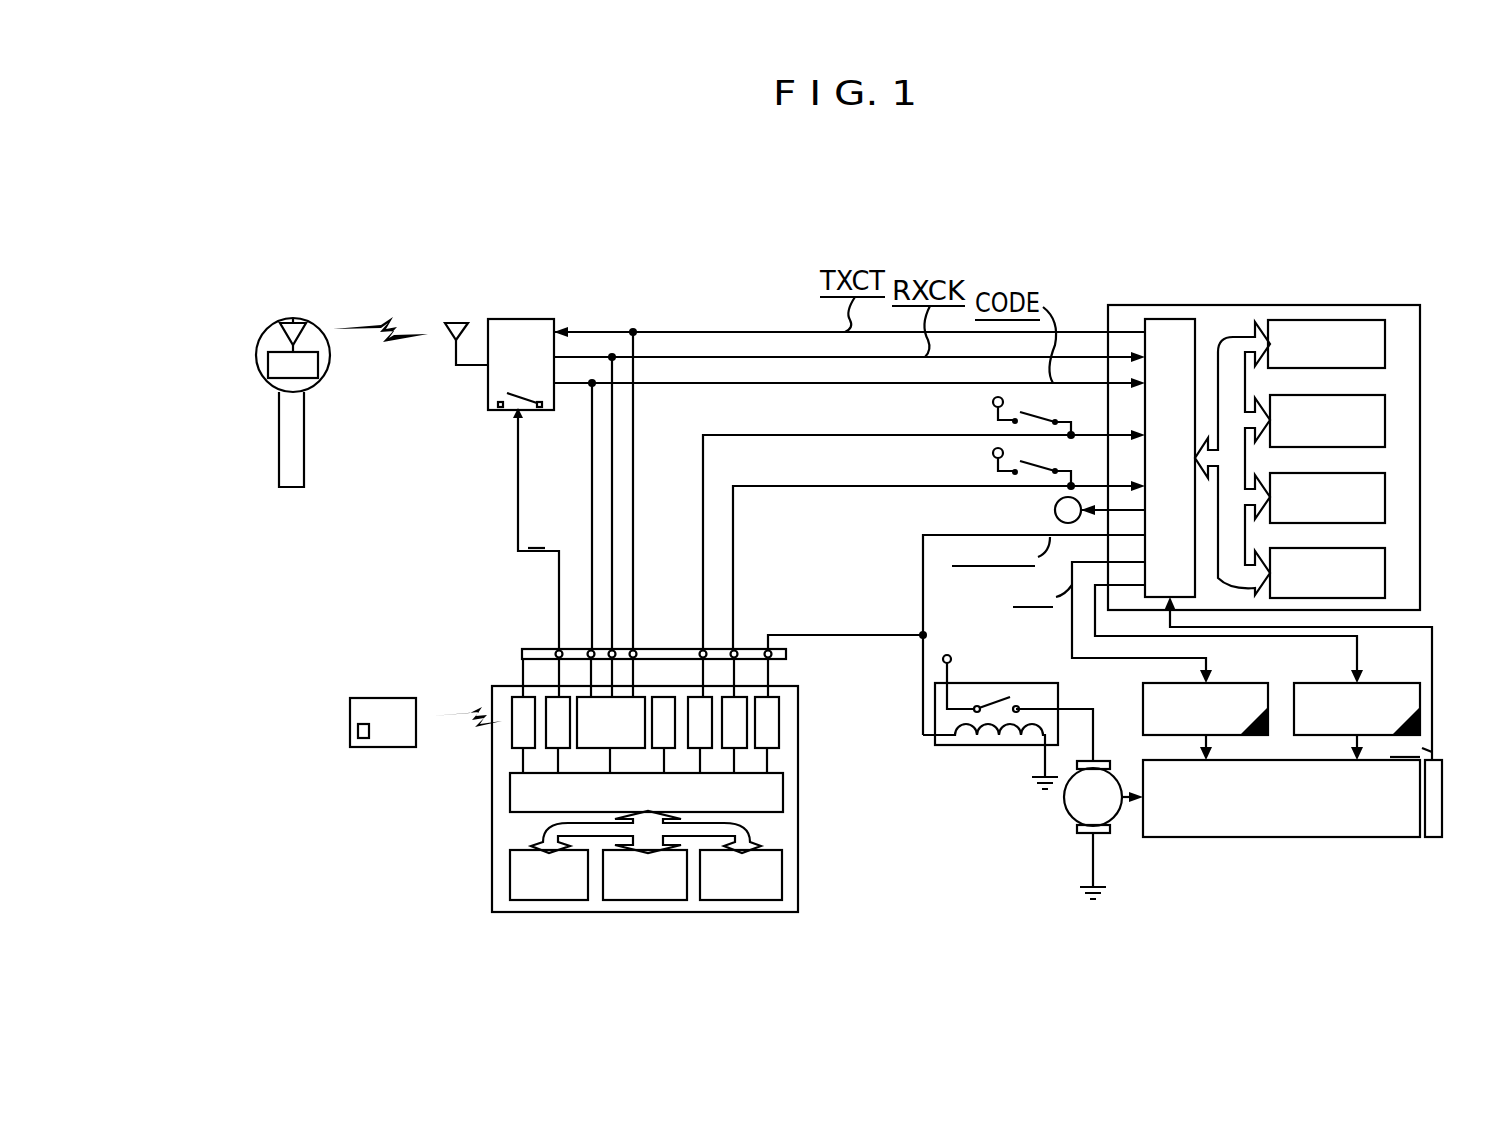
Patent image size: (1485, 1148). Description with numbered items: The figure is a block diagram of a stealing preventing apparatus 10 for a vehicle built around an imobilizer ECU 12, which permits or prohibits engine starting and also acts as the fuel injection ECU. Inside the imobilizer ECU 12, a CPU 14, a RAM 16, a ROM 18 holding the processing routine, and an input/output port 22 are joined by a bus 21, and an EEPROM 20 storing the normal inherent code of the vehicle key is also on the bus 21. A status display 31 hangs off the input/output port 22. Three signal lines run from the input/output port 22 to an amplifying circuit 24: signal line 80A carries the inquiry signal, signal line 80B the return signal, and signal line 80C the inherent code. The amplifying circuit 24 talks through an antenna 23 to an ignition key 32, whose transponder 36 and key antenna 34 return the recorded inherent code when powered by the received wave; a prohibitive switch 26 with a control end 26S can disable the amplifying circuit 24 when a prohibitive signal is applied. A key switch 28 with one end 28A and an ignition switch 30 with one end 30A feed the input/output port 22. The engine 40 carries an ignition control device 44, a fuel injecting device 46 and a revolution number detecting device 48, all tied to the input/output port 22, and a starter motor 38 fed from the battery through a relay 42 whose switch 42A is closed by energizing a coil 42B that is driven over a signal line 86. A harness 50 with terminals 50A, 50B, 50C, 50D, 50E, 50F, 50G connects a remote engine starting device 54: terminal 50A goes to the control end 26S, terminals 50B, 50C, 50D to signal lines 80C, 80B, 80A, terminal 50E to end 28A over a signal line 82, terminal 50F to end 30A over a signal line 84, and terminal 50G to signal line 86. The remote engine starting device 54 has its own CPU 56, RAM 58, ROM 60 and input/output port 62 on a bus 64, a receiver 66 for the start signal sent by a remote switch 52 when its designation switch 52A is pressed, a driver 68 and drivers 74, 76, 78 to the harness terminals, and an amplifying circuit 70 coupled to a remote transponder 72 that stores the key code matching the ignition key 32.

The stealing preventing apparatus 10 is at (758, 248).
The imobilizer ECU 12 is at (1264, 428).
The CPU 14 is at (1347, 342).
The RAM 16 is at (1348, 421).
The ROM 18 is at (1348, 497).
The EEPROM 20 is at (1344, 560).
The bus 21 is at (1239, 421).
The input/output port 22 is at (1183, 422).
The antenna 23 is at (464, 319).
The amplifying circuit 24 is at (521, 341).
The prohibitive switch 26 is at (541, 418).
The control end 26S is at (496, 528).
The key switch 28 is at (982, 406).
The one end of key switch 28A is at (1077, 415).
The ignition switch 30 is at (980, 480).
The one end of ignition switch 30A is at (1069, 466).
The status display 31 is at (1077, 516).
The ignition key 32 is at (275, 402).
The key antenna 34 is at (264, 312).
The transponder 36 is at (319, 387).
The starter motor 38 is at (1079, 804).
The engine 40 is at (1281, 823).
The relay 42 is at (996, 695).
The switch 42A is at (1022, 678).
The coil 42B is at (990, 763).
The ignition control device 44 is at (1143, 661).
The fuel injecting device 46 is at (1258, 672).
The revolution number detecting device 48 is at (1303, 741).
The harness 50 is at (647, 657).
The terminal 50A is at (535, 648).
The terminal 50B is at (551, 637).
The terminal 50C is at (645, 642).
The terminal 50D is at (655, 653).
The terminal 50E is at (741, 640).
The terminal 50F is at (764, 652).
The terminal 50G is at (844, 666).
The remote switch 52 is at (383, 695).
The designation switch 52A is at (330, 709).
The remote engine starting device 54 is at (624, 818).
The CPU 56 is at (549, 904).
The RAM 58 is at (645, 904).
The ROM 60 is at (741, 904).
The input/output port 62 is at (683, 792).
The bus 64 is at (694, 833).
The receiver 66 is at (503, 717).
The driver 68 is at (543, 717).
The amplifying circuit 70 is at (604, 737).
The remote transponder 72 is at (645, 737).
The driver 74 is at (682, 716).
The driver 76 is at (778, 716).
The driver 78 is at (800, 733).
The signal line 80A is at (849, 469).
The signal line 80B is at (849, 469).
The signal line 80C is at (849, 513).
The signal line 82 is at (924, 519).
The signal line 84 is at (939, 545).
The signal line 86 is at (1001, 635).